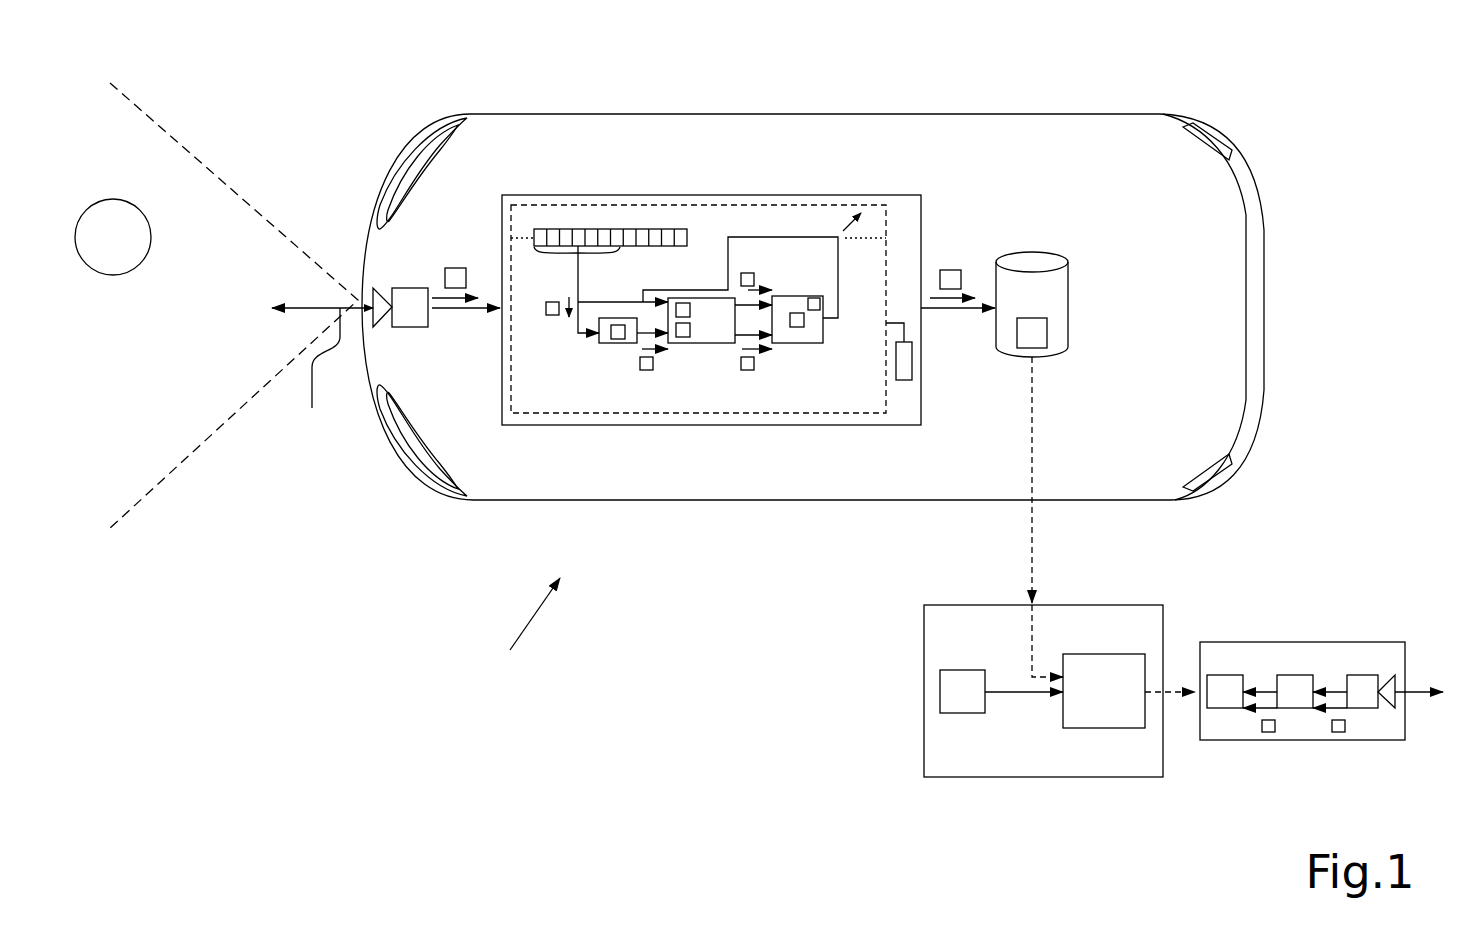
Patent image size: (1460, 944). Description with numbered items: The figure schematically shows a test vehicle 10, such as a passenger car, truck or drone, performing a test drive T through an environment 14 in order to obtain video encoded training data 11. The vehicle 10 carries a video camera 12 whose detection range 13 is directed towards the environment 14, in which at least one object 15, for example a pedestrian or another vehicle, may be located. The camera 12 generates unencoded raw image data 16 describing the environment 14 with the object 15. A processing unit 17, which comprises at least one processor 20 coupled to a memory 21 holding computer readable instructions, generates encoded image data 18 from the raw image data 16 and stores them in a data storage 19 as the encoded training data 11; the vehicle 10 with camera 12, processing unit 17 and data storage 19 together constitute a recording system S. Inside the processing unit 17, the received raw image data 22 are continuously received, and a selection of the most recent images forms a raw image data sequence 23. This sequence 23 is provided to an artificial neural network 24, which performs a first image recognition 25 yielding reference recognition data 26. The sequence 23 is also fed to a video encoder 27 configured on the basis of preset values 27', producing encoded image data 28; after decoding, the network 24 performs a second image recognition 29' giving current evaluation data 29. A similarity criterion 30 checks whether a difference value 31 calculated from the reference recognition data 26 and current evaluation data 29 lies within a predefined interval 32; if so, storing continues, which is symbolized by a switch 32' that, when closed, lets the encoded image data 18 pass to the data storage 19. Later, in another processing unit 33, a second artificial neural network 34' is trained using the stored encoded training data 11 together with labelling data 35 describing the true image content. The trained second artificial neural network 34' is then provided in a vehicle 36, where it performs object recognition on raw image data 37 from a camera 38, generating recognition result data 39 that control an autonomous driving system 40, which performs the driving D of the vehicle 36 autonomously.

The test vehicle 10 is at (657, 114).
The encoded training data 11 is at (1047, 333).
The video camera 12 is at (410, 288).
The detection range 13 is at (235, 188).
The environment 14 is at (197, 340).
The object 15 is at (113, 275).
The raw image data 16 is at (455, 268).
The processing unit 17 is at (597, 195).
The encoded image data 18 is at (951, 270).
The data storage 19 is at (1030, 252).
The processor 20 is at (877, 195).
The memory 21 is at (904, 380).
The received raw image data 22 is at (668, 229).
The raw image data sequence 23 is at (546, 314).
The artificial neural network 24 is at (717, 343).
The first image recognition 25 is at (683, 303).
The reference recognition data 26 is at (754, 279).
The video encoder 27 is at (610, 394).
The preset values 27' is at (634, 297).
The encoded image data 28 is at (646, 370).
The current evaluation data 29 is at (736, 422).
The second image recognition 29' is at (655, 432).
The similarity criterion 30 is at (787, 343).
The difference value 31 is at (798, 343).
The predefined interval 32 is at (847, 294).
The switch 32' is at (830, 188).
The processing unit 33 is at (924, 697).
The second artificial neural network 34' is at (1200, 704).
The labelling data 35 is at (960, 713).
The vehicle 36 is at (1335, 642).
The raw image data 37 is at (1338, 732).
The camera 38 is at (1363, 675).
The recognition result data 39 is at (1268, 732).
The autonomous driving system 40 is at (1222, 675).
The recording system S is at (525, 632).
The test drive T is at (321, 368).
The driving D is at (1420, 692).